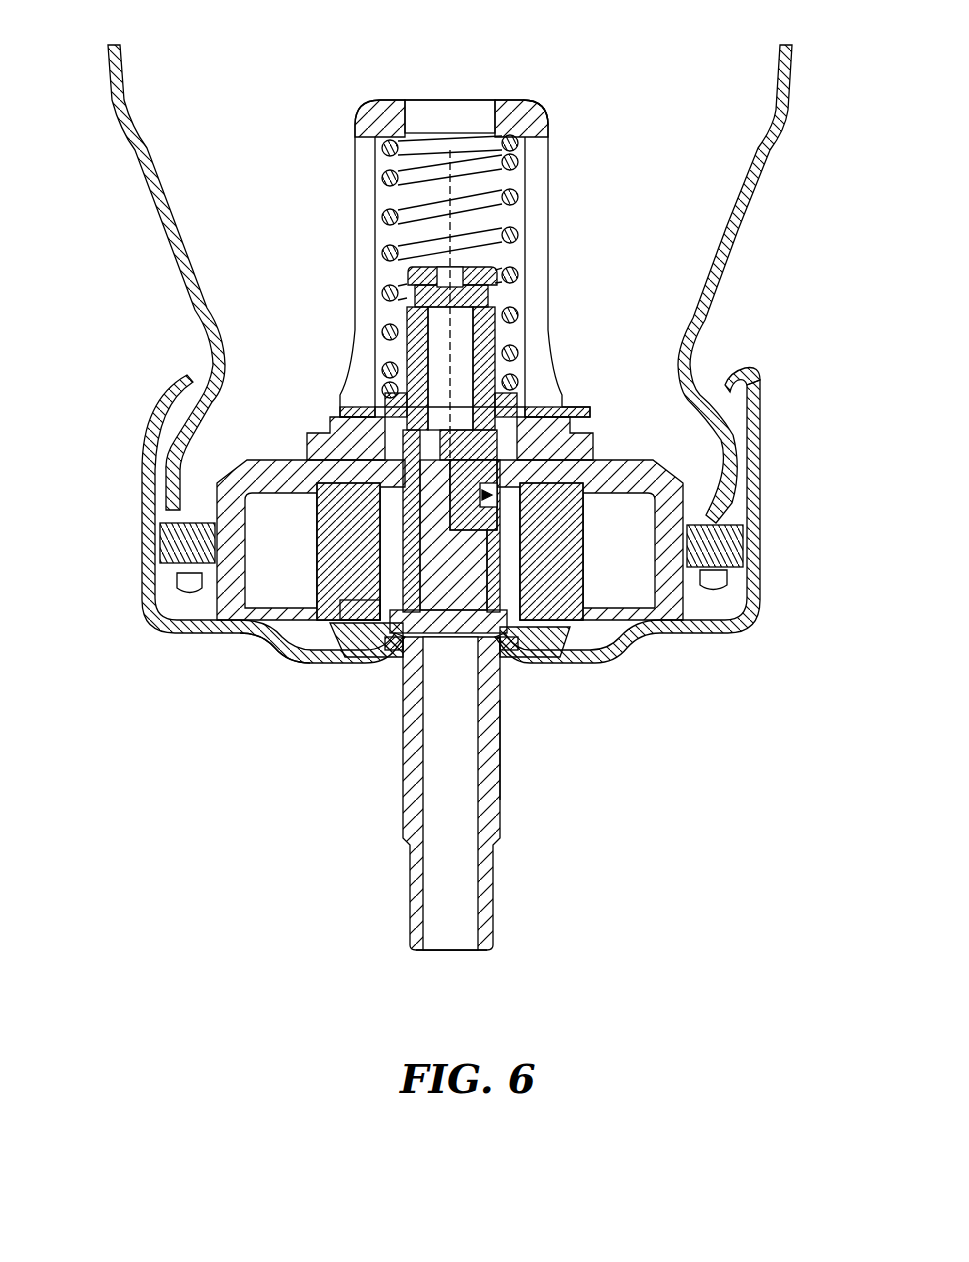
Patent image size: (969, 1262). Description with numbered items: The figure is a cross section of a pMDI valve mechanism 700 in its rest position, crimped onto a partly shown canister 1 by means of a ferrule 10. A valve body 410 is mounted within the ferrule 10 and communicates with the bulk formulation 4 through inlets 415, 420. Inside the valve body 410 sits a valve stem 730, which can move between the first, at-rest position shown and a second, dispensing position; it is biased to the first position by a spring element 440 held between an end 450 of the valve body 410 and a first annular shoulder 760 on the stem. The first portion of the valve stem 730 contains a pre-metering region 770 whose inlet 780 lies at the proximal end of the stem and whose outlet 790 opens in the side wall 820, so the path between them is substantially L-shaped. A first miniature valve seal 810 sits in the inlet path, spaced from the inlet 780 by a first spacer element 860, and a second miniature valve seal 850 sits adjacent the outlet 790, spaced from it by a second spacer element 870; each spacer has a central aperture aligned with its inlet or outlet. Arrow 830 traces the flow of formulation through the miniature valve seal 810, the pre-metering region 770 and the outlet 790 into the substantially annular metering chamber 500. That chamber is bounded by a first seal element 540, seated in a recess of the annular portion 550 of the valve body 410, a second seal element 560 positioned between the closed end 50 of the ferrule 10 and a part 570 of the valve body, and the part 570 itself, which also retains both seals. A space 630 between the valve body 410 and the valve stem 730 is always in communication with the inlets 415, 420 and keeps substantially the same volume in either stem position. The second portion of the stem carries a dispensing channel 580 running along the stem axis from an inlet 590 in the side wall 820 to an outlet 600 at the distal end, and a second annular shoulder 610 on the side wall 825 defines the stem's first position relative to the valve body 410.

The canister 1 is at (740, 280).
The bulk formulation 4 is at (267, 269).
The ferrule 10 is at (762, 600).
The closed end of the ferrule 50 is at (578, 682).
The valve body 410 is at (368, 123).
The inlet 415 is at (362, 165).
The inlet 420 is at (480, 90).
The spring element 440 is at (457, 252).
The end of the valve body 450 is at (398, 110).
The metering chamber 500 is at (500, 500).
The first seal element 540 is at (330, 473).
The annular portion of the valve body 550 is at (330, 437).
The second seal element 560 is at (258, 640).
The part of the valve body 570 is at (560, 592).
The dispensing channel 580 is at (462, 796).
The inlet of the dispensing channel 590 is at (404, 660).
The outlet of the dispensing channel 600 is at (455, 953).
The second annular shoulder 610 is at (388, 655).
The space 630 is at (372, 452).
The valve mechanism 700 is at (570, 100).
The valve stem 730 is at (494, 340).
The first annular shoulder 760 is at (530, 400).
The pre-metering region 770 is at (400, 393).
The inlet of the pre-metering region 780 is at (458, 268).
The outlet of the pre-metering region 790 is at (752, 432).
The miniature valve seal 810 is at (407, 316).
The side wall of the valve stem 820 is at (516, 437).
The side wall of the valve stem 825 is at (516, 751).
The arrow 830 is at (436, 190).
The second miniature valve seal 850 is at (385, 603).
The first spacer element 860 is at (484, 276).
The second spacer element 870 is at (530, 660).